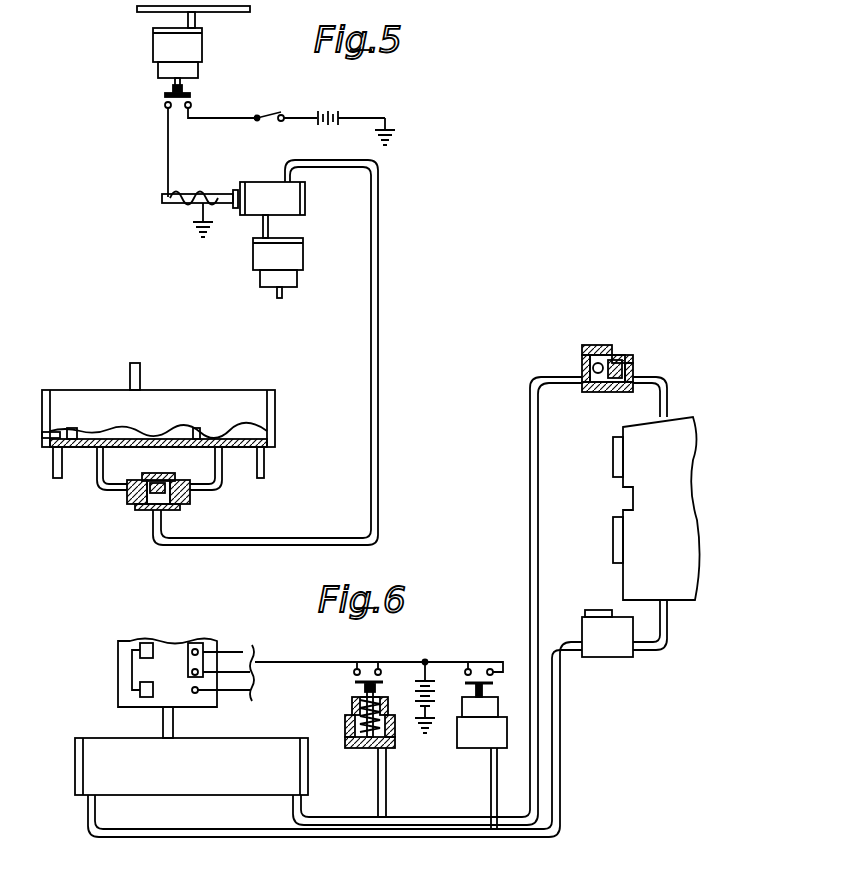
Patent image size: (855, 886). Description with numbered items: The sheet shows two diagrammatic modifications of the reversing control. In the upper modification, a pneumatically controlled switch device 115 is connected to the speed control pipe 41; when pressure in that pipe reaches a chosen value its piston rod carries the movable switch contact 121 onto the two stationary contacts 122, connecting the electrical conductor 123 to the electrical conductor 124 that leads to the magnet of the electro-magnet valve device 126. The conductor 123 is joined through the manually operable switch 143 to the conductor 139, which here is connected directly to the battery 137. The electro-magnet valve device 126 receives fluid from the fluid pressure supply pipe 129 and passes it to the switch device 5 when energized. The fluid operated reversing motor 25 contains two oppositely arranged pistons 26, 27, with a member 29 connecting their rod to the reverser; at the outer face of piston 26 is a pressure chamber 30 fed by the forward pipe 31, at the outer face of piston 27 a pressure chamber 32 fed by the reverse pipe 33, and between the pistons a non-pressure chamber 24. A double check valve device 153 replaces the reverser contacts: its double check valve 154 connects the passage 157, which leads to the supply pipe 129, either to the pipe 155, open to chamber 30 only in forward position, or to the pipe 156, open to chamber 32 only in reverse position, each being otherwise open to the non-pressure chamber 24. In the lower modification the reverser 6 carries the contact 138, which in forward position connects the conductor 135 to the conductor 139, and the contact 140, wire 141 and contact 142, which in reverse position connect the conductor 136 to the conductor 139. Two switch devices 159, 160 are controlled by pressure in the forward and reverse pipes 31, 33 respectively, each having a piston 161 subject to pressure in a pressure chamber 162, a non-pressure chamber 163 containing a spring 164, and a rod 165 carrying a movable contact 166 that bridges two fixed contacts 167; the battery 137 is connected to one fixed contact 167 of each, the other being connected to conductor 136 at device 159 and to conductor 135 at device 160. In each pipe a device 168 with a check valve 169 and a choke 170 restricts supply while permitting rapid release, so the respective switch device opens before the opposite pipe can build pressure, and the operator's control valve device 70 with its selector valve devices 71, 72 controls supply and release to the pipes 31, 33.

In FIG. 5, the speed control pipe 41 is at (246, 12).
In FIG. 5, the pneumatically controlled switch device 115 is at (150, 43).
In FIG. 5, the movable switch contact 121 is at (164, 95).
In FIG. 5, the stationary contacts 122 is at (166, 108).
In FIG. 5, the electrical conductor 123 is at (219, 117).
In FIG. 5, the electrical conductor 124 is at (167, 150).
In FIG. 5, the manually operable switch 143 is at (262, 113).
In FIG. 5, the conductor 139 is at (297, 117).
In FIG. 6, the conductor 139 is at (233, 652).
In FIG. 5, the battery 137 is at (340, 114).
In FIG. 6, the battery 137 is at (430, 665).
In FIG. 5, the electro-magnet valve device 126 is at (266, 180).
In FIG. 5, the fluid pressure supply pipe 129 is at (331, 168).
In FIG. 5, the switch device 5 is at (250, 259).
In FIG. 5, the reversing motor 25 is at (62, 389).
In FIG. 6, the reversing motor 25 is at (72, 760).
In FIG. 5, the member 29 is at (129, 372).
In FIG. 6, the member 29 is at (164, 726).
In FIG. 5, the non-pressure chamber 24 is at (156, 430).
In FIG. 5, the piston 27 is at (67, 430).
In FIG. 5, the pressure chamber 32 is at (52, 437).
In FIG. 5, the reverse pipe 33 is at (53, 462).
In FIG. 6, the reverse pipe 33 is at (560, 790).
In FIG. 5, the pressure chamber 30 is at (266, 432).
In FIG. 5, the piston 26 is at (231, 437).
In FIG. 5, the forward pipe 31 is at (265, 465).
In FIG. 6, the forward pipe 31 is at (538, 745).
In FIG. 5, the pipe 156 is at (99, 484).
In FIG. 5, the double check valve 154 is at (132, 498).
In FIG. 5, the double check valve device 153 is at (139, 511).
In FIG. 5, the passage 157 is at (184, 503).
In FIG. 5, the pipe 155 is at (216, 487).
In FIG. 6, the reverser 6 is at (113, 638).
In FIG. 6, the contact 142 is at (140, 650).
In FIG. 6, the wire 141 is at (132, 670).
In FIG. 6, the contact 140 is at (140, 692).
In FIG. 6, the contact 138 is at (205, 660).
In FIG. 6, the conductor 135 is at (223, 701).
In FIG. 6, the conductor 136 is at (262, 672).
In FIG. 6, the fixed contacts 167 is at (373, 660).
In FIG. 6, the movable contact 166 is at (352, 680).
In FIG. 6, the rod 165 is at (365, 690).
In FIG. 6, the spring 164 is at (352, 708).
In FIG. 6, the non-pressure chamber 163 is at (346, 728).
In FIG. 6, the piston 161 is at (347, 744).
In FIG. 6, the pressure chamber 162 is at (368, 749).
In FIG. 6, the switch device 159 is at (393, 729).
In FIG. 6, the switch device 160 is at (461, 740).
In FIG. 6, the device 168 is at (594, 343).
In FIG. 6, the check valve 169 is at (593, 367).
In FIG. 6, the choke 170 is at (612, 385).
In FIG. 6, the operator's control valve device 70 is at (698, 428).
In FIG. 6, the selector valve device 71 is at (650, 467).
In FIG. 6, the selector valve device 72 is at (650, 550).